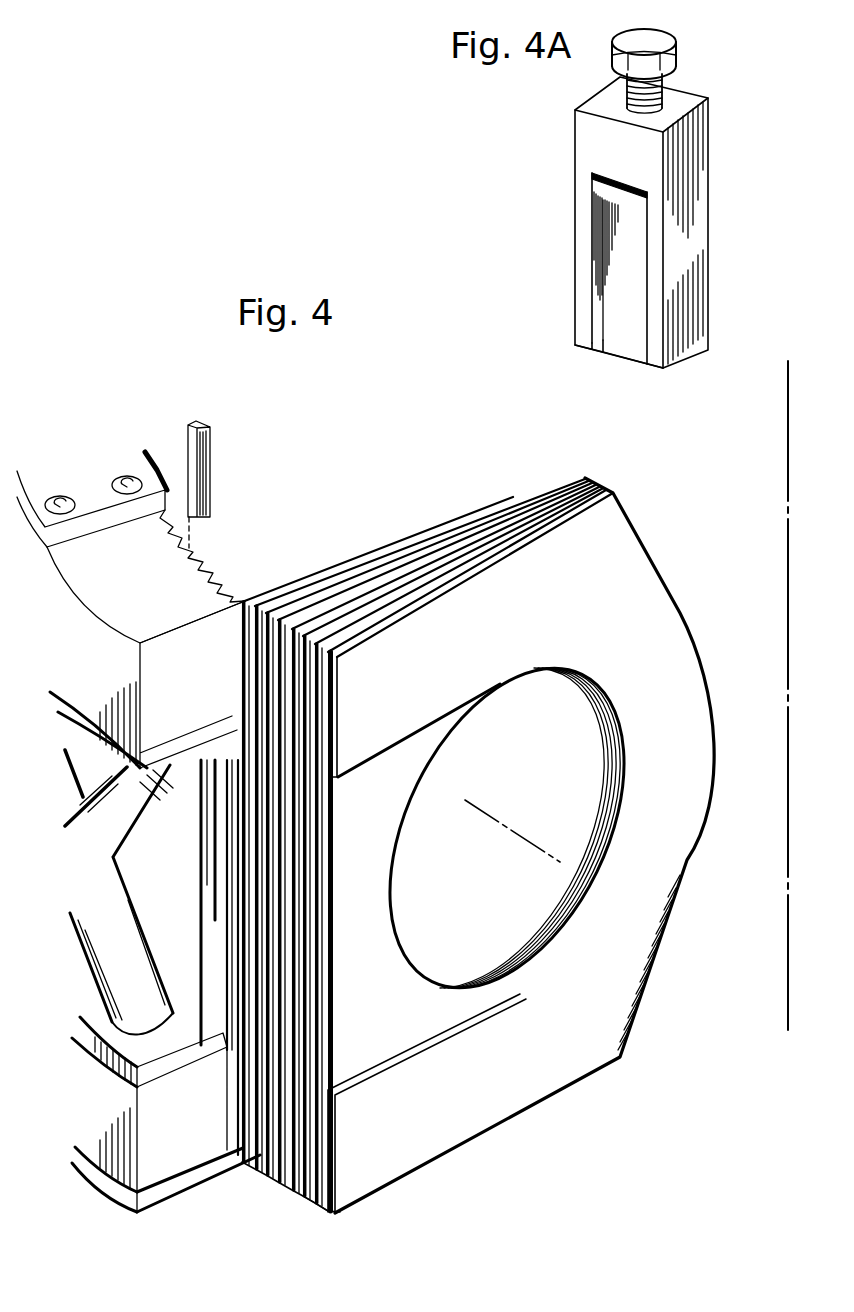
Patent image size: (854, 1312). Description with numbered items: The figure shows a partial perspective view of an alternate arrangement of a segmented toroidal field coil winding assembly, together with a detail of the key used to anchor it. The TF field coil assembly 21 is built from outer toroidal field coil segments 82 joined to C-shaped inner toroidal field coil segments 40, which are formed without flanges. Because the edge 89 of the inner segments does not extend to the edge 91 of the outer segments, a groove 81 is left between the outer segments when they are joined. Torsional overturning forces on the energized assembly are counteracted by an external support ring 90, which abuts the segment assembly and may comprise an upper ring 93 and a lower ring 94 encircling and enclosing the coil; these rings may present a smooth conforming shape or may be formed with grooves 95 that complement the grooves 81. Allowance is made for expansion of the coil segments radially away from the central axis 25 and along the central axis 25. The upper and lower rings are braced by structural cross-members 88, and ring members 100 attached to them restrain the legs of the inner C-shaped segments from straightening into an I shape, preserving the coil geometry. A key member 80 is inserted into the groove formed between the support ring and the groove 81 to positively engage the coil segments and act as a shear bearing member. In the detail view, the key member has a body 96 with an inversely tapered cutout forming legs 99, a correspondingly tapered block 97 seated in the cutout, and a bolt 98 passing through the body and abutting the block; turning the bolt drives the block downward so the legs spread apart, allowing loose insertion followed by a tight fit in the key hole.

In FIG. 4, the TF field coil assembly 21 is at (538, 867).
In FIG. 4, the central axis 25 is at (788, 568).
In FIG. 4, the inner toroidal field coil segments 40 is at (637, 698).
In FIG. 4A, the key member 80 is at (668, 217).
In FIG. 4, the key member 80 is at (203, 452).
In FIG. 4, the groove 81 is at (310, 647).
In FIG. 4, the outer toroidal field coil segments 82 is at (382, 874).
In FIG. 4, the structural cross-members 88 is at (110, 840).
In FIG. 4, the edge of inner segments 89 is at (333, 1163).
In FIG. 4, the external support ring 90 is at (135, 1136).
In FIG. 4, the edge of outer segments 91 is at (310, 1208).
In FIG. 4, the upper ring 93 is at (220, 628).
In FIG. 4, the lower ring 94 is at (155, 1167).
In FIG. 4, the grooves 95 is at (200, 560).
In FIG. 4A, the body 96 is at (601, 132).
In FIG. 4A, the tapered block 97 is at (611, 218).
In FIG. 4A, the bolt 98 is at (663, 43).
In FIG. 4A, the legs 99 is at (650, 355).
In FIG. 4, the ring members 100 is at (160, 786).